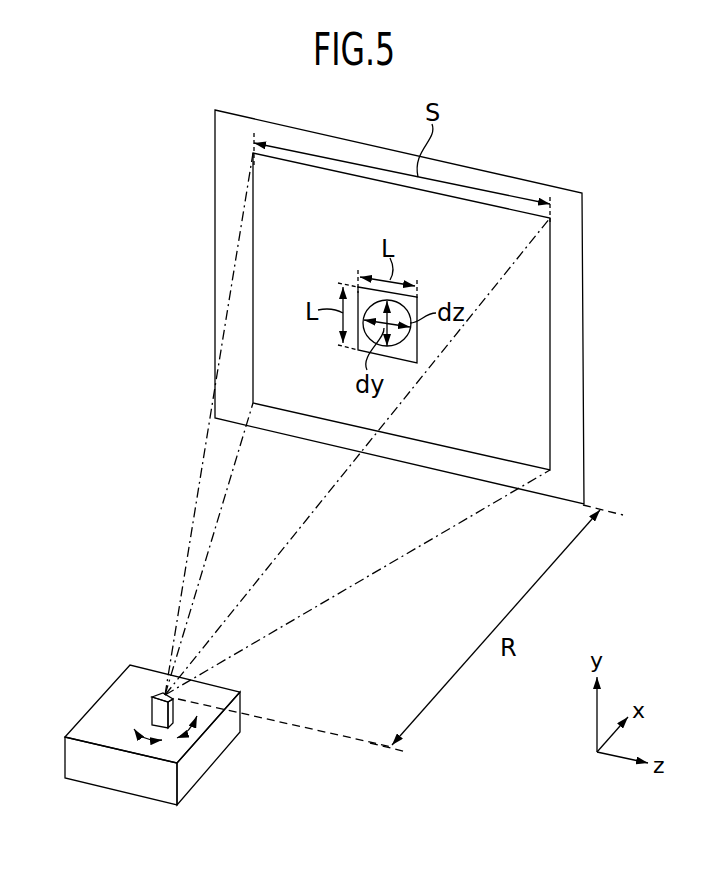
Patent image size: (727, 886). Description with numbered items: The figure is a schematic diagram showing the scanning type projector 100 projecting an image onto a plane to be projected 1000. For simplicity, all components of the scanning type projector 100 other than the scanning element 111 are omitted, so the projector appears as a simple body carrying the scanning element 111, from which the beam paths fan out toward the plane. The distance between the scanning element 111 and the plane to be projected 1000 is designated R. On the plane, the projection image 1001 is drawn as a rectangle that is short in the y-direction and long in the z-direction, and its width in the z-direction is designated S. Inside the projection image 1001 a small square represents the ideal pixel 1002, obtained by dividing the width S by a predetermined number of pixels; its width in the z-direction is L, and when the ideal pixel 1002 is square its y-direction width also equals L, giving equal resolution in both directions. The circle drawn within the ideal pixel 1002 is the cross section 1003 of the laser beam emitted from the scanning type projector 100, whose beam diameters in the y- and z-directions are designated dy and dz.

The plane to be projected 1000 is at (223, 190).
The projection image 1001 is at (272, 257).
The ideal pixel 1002 is at (410, 348).
The cross section of laser beam 1003 is at (410, 327).
The scanning type projector 100 is at (102, 777).
The scanning element 111 is at (157, 712).